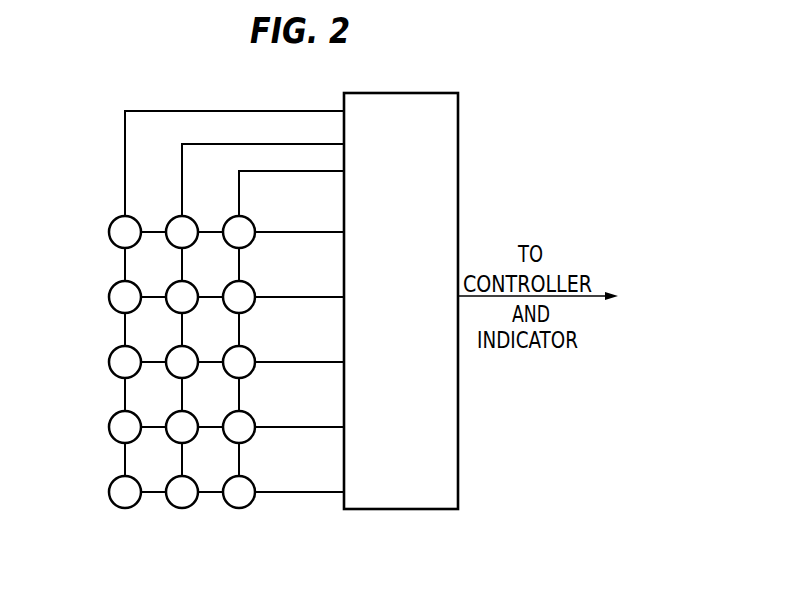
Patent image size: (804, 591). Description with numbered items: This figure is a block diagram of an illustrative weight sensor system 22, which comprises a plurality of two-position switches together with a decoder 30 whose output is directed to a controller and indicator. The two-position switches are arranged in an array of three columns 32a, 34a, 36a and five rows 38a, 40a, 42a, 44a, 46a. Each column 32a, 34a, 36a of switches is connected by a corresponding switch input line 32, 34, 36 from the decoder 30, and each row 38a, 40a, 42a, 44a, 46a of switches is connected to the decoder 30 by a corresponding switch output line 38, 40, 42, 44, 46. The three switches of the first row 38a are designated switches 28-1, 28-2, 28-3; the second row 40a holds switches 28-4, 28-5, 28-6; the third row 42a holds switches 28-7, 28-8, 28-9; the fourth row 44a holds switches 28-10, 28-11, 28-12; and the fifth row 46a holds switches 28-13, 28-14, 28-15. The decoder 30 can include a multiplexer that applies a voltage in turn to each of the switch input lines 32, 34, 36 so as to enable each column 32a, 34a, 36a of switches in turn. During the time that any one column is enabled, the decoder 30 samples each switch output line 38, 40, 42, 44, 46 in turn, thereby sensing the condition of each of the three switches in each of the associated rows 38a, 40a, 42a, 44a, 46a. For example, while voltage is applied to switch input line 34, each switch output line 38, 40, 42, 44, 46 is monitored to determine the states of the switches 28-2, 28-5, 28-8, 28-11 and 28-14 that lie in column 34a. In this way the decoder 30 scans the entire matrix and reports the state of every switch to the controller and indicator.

The weight sensor system 22 is at (531, 103).
The decoder 30 is at (458, 108).
The switch input line 32 is at (232, 111).
The switch input line 34 is at (272, 144).
The switch input line 36 is at (315, 171).
The switch output line 38 is at (314, 230).
The switch output line 40 is at (314, 295).
The switch output line 42 is at (314, 360).
The switch output line 44 is at (314, 425).
The switch output line 46 is at (314, 490).
The row of switches 38a is at (96, 229).
The row of switches 40a is at (96, 294).
The row of switches 42a is at (96, 359).
The row of switches 44a is at (96, 424).
The row of switches 46a is at (96, 489).
The column of switches 32a is at (120, 530).
The column of switches 34a is at (176, 530).
The column of switches 36a is at (234, 530).
The two-position switch 28-1 is at (113, 221).
The two-position switch 28-2 is at (170, 221).
The two-position switch 28-3 is at (227, 221).
The two-position switch 28-4 is at (113, 286).
The two-position switch 28-5 is at (170, 286).
The two-position switch 28-6 is at (227, 286).
The two-position switch 28-7 is at (113, 351).
The two-position switch 28-8 is at (170, 351).
The two-position switch 28-9 is at (227, 351).
The two-position switch 28-10 is at (113, 416).
The two-position switch 28-11 is at (170, 416).
The two-position switch 28-12 is at (227, 416).
The two-position switch 28-13 is at (113, 481).
The two-position switch 28-14 is at (170, 481).
The two-position switch 28-15 is at (227, 481).